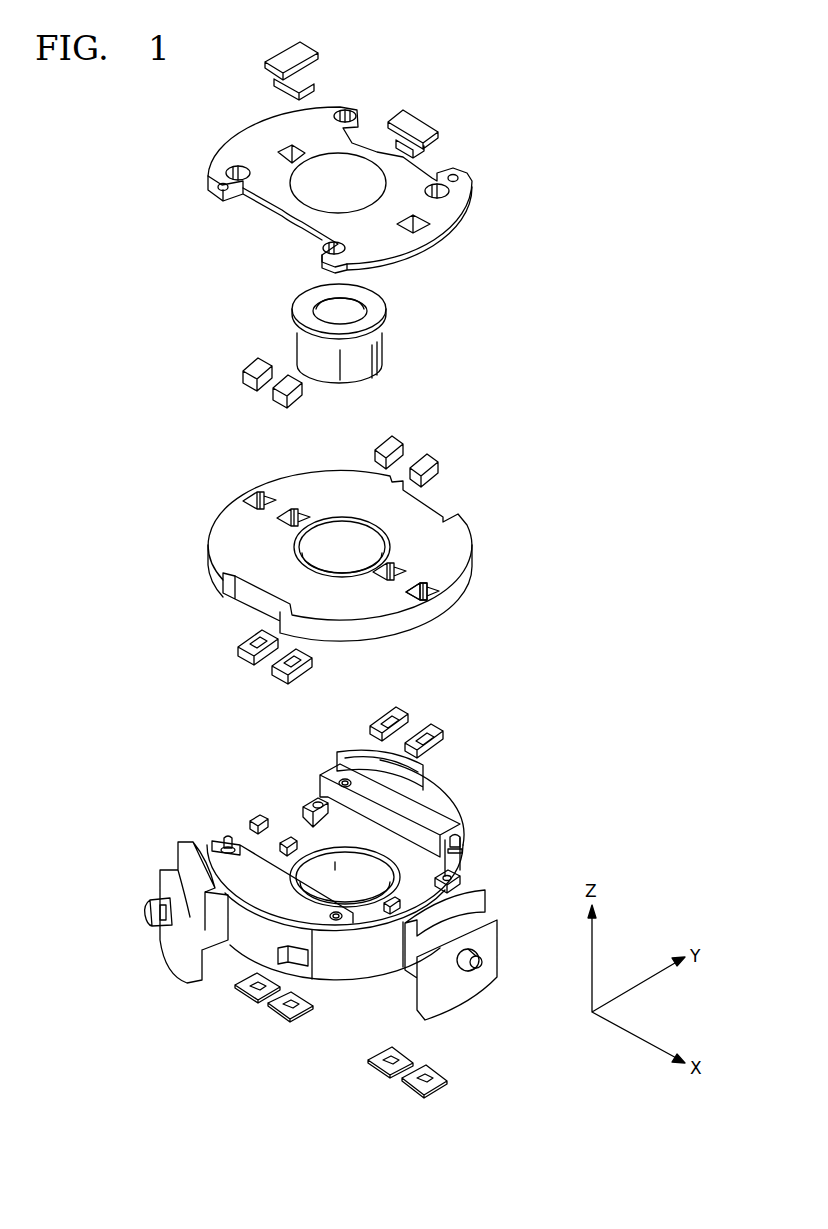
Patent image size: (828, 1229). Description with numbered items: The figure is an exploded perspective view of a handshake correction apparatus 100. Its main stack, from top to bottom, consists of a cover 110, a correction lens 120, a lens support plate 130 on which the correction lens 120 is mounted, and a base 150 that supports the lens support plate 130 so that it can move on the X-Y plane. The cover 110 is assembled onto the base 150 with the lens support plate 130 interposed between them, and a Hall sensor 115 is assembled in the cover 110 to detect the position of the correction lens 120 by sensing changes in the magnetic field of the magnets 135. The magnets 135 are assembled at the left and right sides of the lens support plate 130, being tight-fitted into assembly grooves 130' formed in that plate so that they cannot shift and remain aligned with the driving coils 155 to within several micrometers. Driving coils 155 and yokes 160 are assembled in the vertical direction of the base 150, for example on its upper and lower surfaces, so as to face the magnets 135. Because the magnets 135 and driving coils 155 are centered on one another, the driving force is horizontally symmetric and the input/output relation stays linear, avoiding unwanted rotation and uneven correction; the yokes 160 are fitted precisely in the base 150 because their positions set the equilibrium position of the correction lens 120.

The handshake correction apparatus 100 is at (514, 106).
The cover 110 is at (458, 203).
The Hall sensor 115 is at (417, 122).
The correction lens 120 is at (360, 313).
The lens support plate 130 is at (378, 577).
The assembly grooves 130' is at (473, 608).
The magnets 135 is at (437, 471).
The base 150 is at (443, 816).
The driving coils 155 is at (432, 733).
The yokes 160 is at (435, 1073).